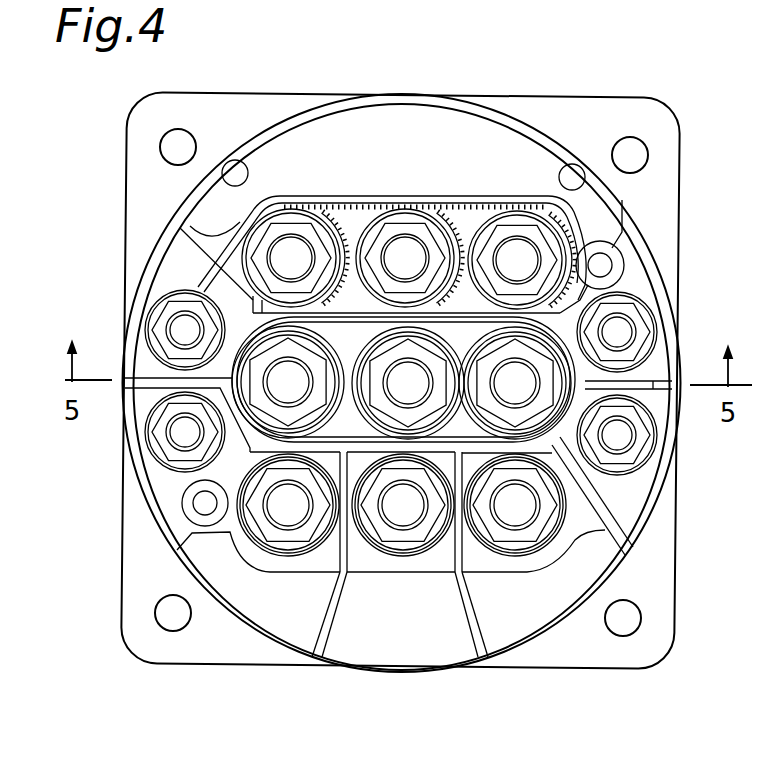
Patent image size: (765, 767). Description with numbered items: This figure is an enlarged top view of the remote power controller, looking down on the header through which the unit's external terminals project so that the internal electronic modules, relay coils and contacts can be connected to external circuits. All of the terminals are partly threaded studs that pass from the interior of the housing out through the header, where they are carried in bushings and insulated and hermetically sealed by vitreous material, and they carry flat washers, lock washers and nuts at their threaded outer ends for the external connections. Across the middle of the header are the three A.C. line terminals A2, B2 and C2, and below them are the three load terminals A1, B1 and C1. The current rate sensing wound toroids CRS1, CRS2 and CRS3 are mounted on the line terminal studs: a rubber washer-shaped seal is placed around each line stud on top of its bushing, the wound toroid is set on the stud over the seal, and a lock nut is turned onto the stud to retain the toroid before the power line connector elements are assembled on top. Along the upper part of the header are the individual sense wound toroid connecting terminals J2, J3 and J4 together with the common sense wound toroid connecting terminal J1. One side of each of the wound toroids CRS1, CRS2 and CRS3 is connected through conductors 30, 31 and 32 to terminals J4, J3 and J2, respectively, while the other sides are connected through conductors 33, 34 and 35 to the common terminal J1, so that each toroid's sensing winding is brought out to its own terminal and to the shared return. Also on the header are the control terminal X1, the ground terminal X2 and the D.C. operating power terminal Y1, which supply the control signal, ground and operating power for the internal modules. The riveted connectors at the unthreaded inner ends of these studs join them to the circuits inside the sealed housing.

The common sense wound toroid connecting terminal J1 is at (184, 322).
The individual sense wound toroid connecting terminal J2 is at (290, 250).
The individual sense wound toroid connecting terminal J3 is at (405, 250).
The individual sense wound toroid connecting terminal J4 is at (512, 255).
The load terminal A1 is at (517, 520).
The line terminal A2 is at (506, 395).
The load terminal B1 is at (403, 520).
The line terminal B2 is at (408, 383).
The load terminal C1 is at (290, 515).
The line terminal C2 is at (300, 385).
The control terminal X1 is at (621, 332).
The ground terminal X2 is at (617, 440).
The operating power terminal Y1 is at (188, 434).
The conductor 30 is at (482, 328).
The conductor 31 is at (372, 328).
The conductor 32 is at (258, 305).
The conductor 33 is at (562, 250).
The conductor 34 is at (448, 222).
The conductor 35 is at (335, 222).
The current rate sensing wound toroid CRS1 is at (572, 380).
The current rate sensing wound toroid CRS2 is at (440, 425).
The current rate sensing wound toroid CRS3 is at (243, 372).